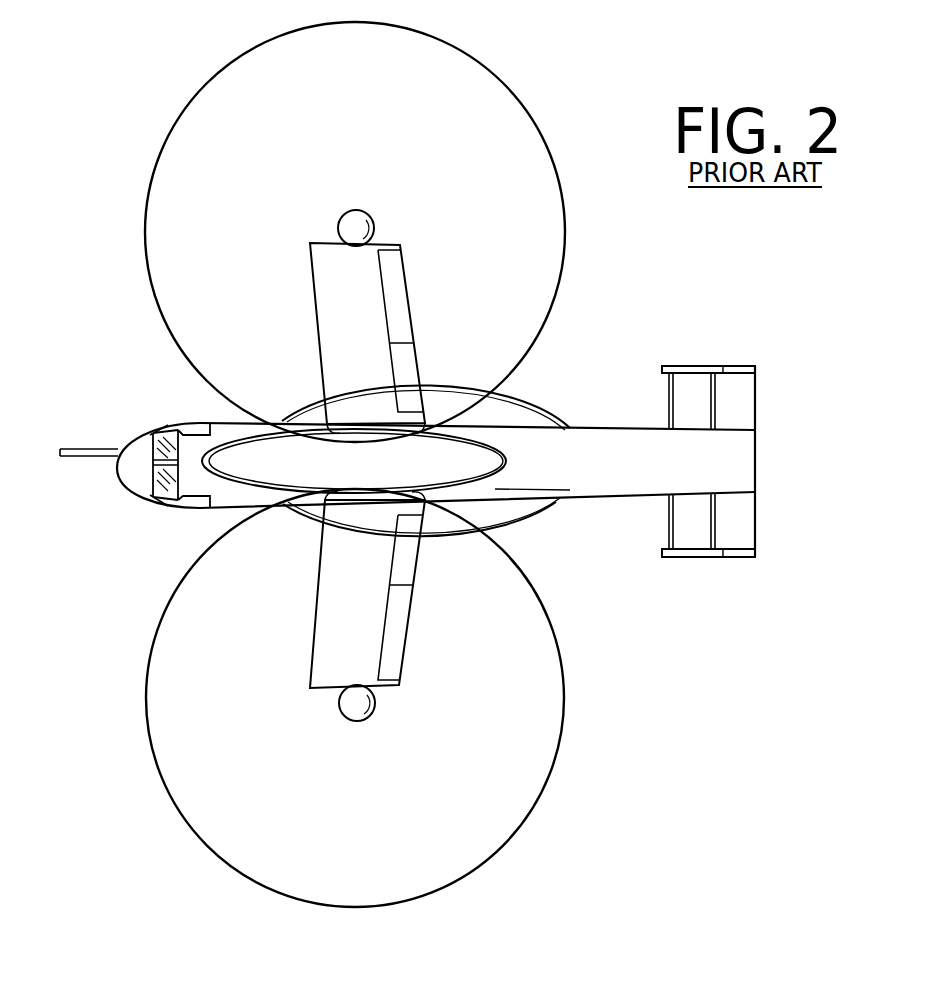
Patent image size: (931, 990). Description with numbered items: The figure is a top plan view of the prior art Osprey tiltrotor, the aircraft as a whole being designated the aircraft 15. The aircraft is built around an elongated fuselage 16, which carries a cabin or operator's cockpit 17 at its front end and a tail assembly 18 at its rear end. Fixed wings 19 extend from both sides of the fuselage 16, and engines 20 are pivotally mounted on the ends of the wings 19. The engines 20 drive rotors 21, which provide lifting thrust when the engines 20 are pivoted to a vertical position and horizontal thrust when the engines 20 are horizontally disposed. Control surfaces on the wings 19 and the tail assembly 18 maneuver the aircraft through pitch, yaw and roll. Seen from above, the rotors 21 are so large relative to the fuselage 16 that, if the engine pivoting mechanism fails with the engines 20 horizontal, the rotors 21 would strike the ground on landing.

The V-22 aircraft 15 is at (542, 372).
The fuselage 16 is at (570, 448).
The cabin or operator's cockpit 17 is at (165, 474).
The tail assembly 18 is at (735, 457).
The fixed wings 19 is at (322, 291).
The engines 20 is at (372, 215).
The rotors 21 is at (545, 214).